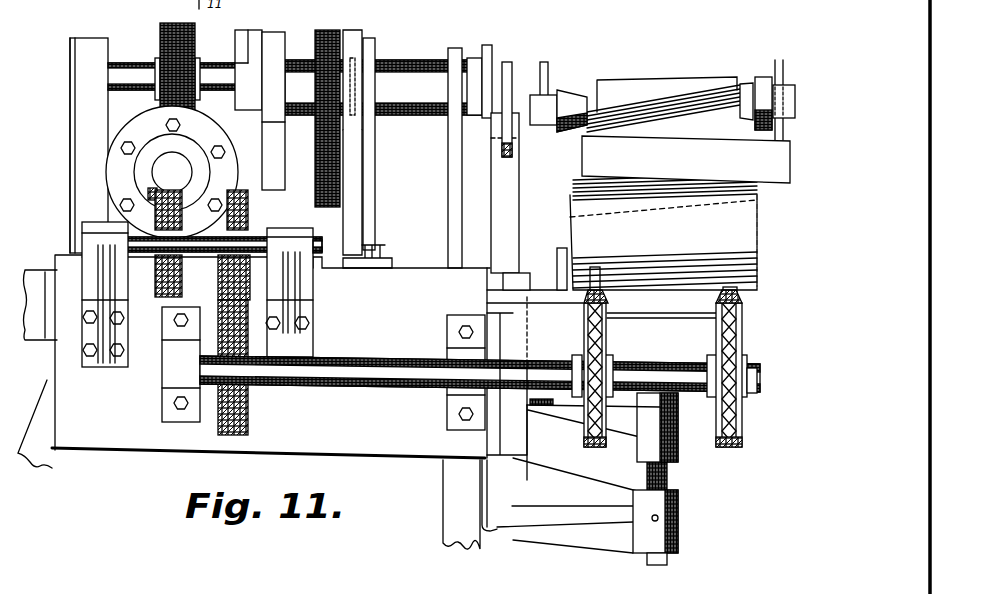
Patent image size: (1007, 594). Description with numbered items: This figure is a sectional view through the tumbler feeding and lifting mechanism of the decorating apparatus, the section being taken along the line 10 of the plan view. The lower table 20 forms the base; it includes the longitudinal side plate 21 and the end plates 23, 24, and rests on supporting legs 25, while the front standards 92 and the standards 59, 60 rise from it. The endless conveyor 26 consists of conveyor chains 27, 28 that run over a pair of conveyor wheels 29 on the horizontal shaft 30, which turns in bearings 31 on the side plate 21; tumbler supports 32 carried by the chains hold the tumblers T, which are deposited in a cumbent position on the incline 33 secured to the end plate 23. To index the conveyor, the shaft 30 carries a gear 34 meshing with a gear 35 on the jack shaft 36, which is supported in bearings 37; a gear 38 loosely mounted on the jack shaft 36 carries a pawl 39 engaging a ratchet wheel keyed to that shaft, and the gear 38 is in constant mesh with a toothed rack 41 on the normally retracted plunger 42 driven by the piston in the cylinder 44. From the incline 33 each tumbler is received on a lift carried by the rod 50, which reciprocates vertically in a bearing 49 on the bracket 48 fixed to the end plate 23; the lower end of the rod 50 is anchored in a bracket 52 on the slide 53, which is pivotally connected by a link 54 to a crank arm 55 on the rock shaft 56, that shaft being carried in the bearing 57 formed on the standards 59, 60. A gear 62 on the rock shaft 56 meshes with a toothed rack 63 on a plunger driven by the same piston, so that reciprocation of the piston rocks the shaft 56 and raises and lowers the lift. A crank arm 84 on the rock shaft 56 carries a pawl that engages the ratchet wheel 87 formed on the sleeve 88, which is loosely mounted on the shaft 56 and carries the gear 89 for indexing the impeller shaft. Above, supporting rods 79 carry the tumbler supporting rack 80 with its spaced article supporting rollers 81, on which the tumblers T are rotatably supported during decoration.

The machine frame upright 10 is at (82, 252).
The lower platform or table 20 is at (405, 268).
The longitudinal side plate 21 is at (375, 450).
The end plate 23 is at (486, 445).
The end plate 24 is at (50, 359).
The supporting legs 25 is at (448, 520).
The endless conveyor 26 is at (621, 362).
The conveyor chain 27 is at (745, 325).
The conveyor chain 28 is at (608, 325).
The conveyor wheels 29 is at (593, 446).
The horizontal shaft 30 is at (378, 362).
The bearings 31 is at (162, 393).
The tumbler supports 32 is at (588, 305).
The incline or runway 33 is at (560, 272).
The gear 34 is at (248, 413).
The gear 35 is at (227, 287).
The jack shaft 36 is at (258, 245).
The bearings 37 is at (92, 282).
The gear 38 is at (157, 300).
The pawl 39 is at (148, 188).
The toothed rack 41 is at (155, 185).
The plunger 42 is at (165, 168).
The cylinder 44 is at (175, 172).
The bracket 48 is at (516, 275).
The bearing 49 is at (678, 458).
The rod 50 is at (650, 477).
The bracket 52 is at (680, 530).
The slide 53 is at (513, 183).
The link 54 is at (510, 70).
The crank arm 55 is at (490, 48).
The rock shaft 56 is at (128, 70).
The bearing 57 is at (400, 68).
The standard 59 is at (452, 150).
The standard 60 is at (365, 140).
The gear 62 is at (195, 36).
The toothed rack 63 is at (686, 152).
The supporting rods 79 is at (549, 66).
The tumbler supporting rack 80 is at (544, 105).
The article supporting rollers 81 is at (572, 102).
The crank arm 84 is at (250, 32).
The ratchet wheel 87 is at (279, 42).
The sleeve 88 is at (320, 30).
The gear 89 is at (350, 33).
The front standards 92 is at (355, 167).
The tumblers T is at (676, 105).